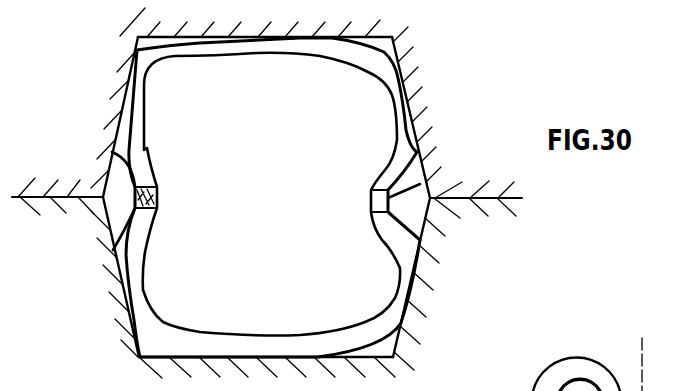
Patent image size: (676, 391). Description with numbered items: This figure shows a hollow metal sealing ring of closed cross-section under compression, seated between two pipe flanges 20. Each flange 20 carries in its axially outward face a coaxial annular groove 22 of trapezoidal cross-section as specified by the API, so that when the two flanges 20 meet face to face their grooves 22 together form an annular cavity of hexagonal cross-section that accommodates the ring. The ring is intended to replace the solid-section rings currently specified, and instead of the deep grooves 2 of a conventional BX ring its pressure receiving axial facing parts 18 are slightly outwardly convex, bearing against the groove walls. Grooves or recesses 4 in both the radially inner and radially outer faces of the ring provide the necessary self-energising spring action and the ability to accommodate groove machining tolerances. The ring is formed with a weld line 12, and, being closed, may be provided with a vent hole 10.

The flange 20 is at (86, 62).
The vent hole 10 is at (278, 197).
The pressure receiving axial facing part 18 is at (283, 63).
The annular groove 22 is at (150, 52).
The groove or recess 4 is at (125, 165).
The weld line 12 is at (135, 197).
The deep groove 2 is at (632, 390).